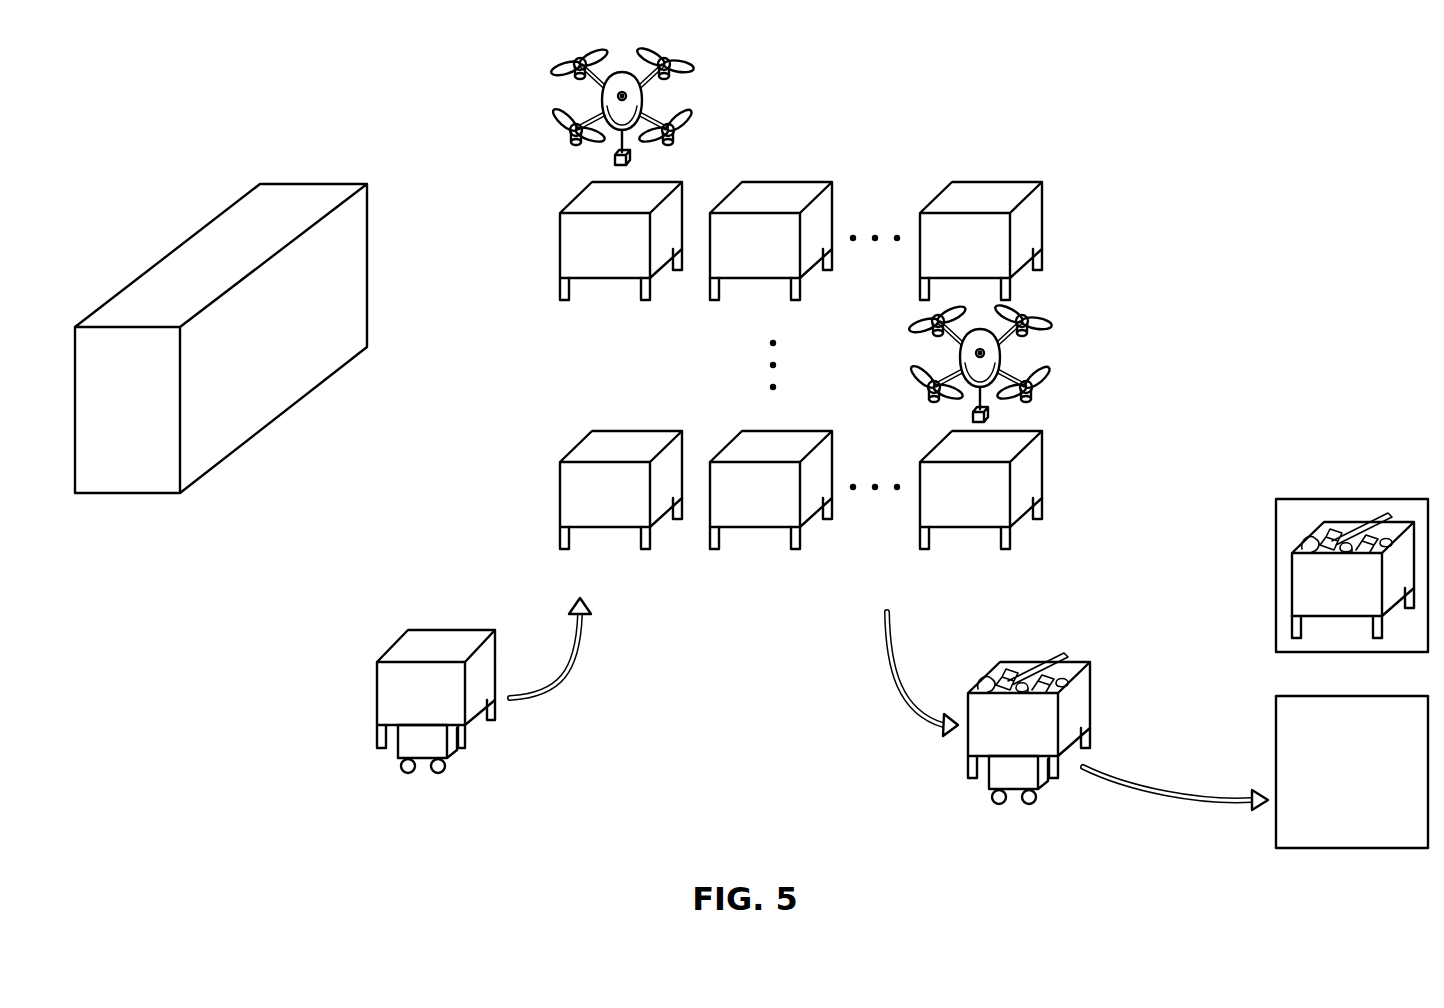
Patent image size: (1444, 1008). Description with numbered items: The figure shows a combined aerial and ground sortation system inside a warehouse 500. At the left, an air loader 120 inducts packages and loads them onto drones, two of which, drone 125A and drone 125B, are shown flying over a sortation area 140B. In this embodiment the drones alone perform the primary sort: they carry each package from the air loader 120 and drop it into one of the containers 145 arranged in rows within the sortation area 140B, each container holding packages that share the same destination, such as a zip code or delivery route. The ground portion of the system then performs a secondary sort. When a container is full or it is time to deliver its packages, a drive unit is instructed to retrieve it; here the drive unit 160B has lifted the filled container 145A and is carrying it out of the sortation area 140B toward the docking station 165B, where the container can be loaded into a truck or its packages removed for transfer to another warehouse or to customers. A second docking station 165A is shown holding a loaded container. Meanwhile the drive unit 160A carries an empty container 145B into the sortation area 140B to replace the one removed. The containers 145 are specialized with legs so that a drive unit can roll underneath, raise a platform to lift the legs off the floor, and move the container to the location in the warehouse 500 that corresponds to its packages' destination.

The air loader 120 is at (300, 184).
The drone 125A is at (631, 87).
The drone 125B is at (1048, 332).
The sortation area 140B is at (1071, 180).
The container 145 is at (560, 248).
The container 145A is at (1090, 693).
The empty container 145B is at (377, 697).
The drive unit 160A is at (418, 774).
The drive unit 160B is at (1009, 802).
The docking station 165A is at (1275, 577).
The docking station 165B is at (1275, 773).
The warehouse 500 is at (1100, 94).